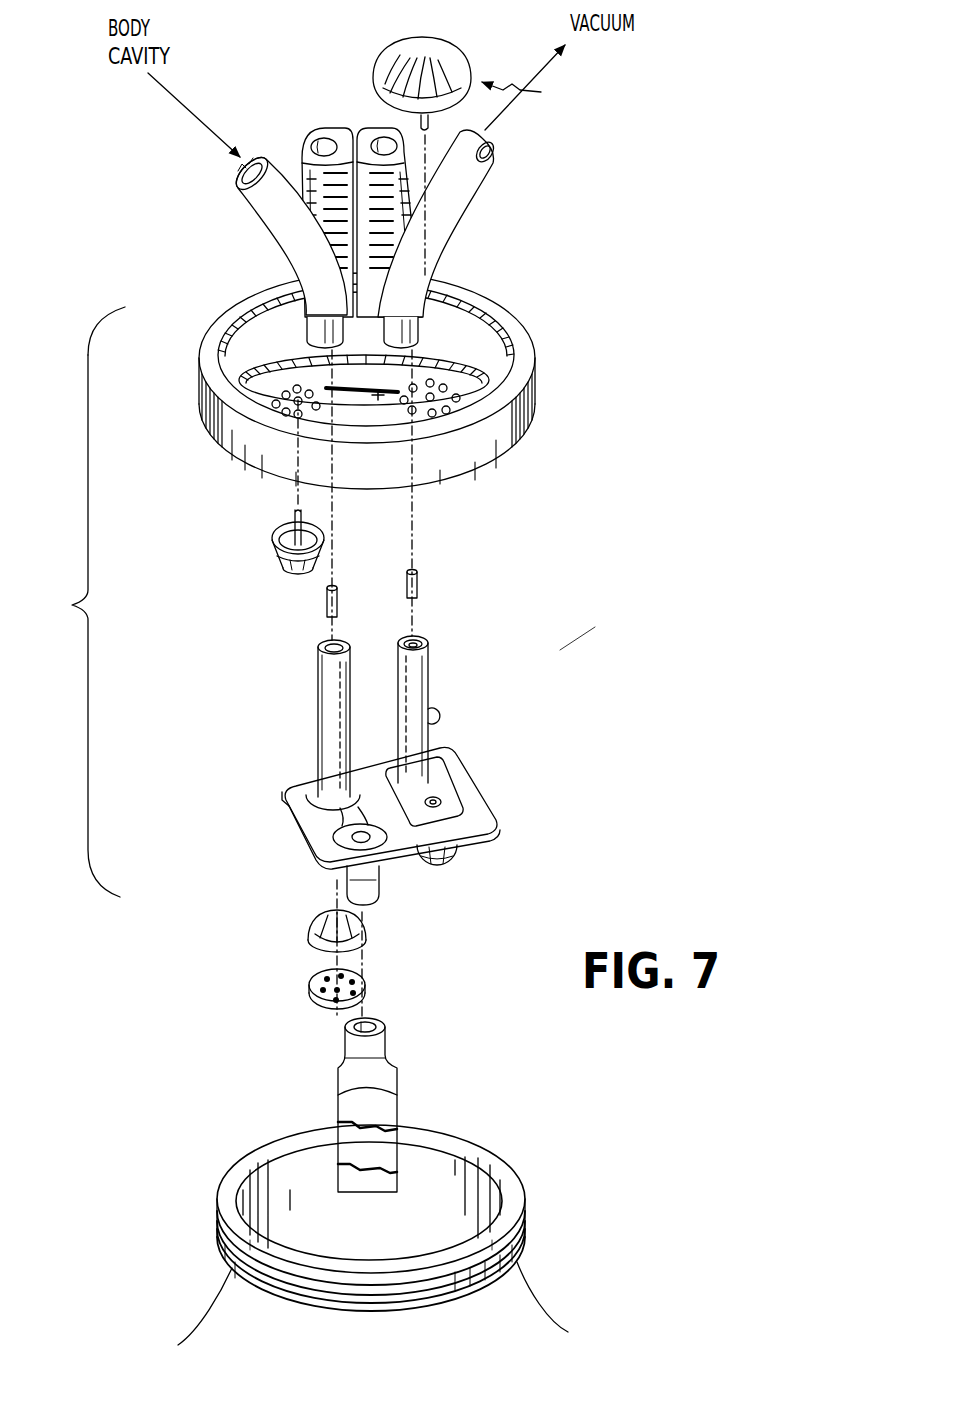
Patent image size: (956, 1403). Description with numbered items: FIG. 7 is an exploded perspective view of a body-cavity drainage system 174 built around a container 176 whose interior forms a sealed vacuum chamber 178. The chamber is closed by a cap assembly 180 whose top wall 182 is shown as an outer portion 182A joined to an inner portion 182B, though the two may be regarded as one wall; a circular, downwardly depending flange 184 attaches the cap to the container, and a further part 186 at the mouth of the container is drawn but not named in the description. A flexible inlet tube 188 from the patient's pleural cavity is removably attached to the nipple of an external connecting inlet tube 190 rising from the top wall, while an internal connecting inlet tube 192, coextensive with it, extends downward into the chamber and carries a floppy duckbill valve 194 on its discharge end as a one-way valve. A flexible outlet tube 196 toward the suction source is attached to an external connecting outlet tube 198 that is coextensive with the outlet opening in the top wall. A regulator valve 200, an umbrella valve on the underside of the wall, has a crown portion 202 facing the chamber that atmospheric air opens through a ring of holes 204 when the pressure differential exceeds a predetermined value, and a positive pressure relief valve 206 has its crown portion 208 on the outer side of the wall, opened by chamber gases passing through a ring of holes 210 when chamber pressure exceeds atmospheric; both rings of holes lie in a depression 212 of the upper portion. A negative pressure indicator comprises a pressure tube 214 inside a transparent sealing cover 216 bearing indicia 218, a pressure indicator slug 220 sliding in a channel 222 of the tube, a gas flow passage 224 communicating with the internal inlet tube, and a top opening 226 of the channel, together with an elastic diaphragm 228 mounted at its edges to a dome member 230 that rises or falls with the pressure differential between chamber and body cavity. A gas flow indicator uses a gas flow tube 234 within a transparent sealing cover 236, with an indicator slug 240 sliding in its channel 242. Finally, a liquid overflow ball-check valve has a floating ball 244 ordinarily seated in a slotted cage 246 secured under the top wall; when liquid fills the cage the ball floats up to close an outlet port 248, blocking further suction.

The system 174 is at (180, 288).
The container 176 is at (577, 1305).
The vacuum chamber 178 is at (371, 1302).
The cap assembly 180 is at (596, 627).
The top wall 182 is at (73, 626).
The outer portion 182A is at (200, 405).
The inner portion 182B is at (286, 810).
The flange 184 is at (535, 390).
The threaded lower ring 186 is at (527, 1233).
The flexible inlet tube 188 is at (280, 205).
The external connecting inlet tube 190 is at (322, 330).
The internal connecting inlet tube 192 is at (379, 890).
The floppy duckbill valve 194 is at (345, 1079).
The flexible outlet tube 196 is at (455, 200).
The external connecting outlet tube 198 is at (416, 338).
The regulator valve 200 is at (273, 527).
The crown portion 202 is at (290, 570).
The ring of holes 204 is at (311, 406).
The positive pressure relief valve 206 is at (528, 90).
The crown portion 208 is at (432, 50).
The ring of holes 210 is at (413, 401).
The depression 212 is at (472, 365).
The pressure tube 214 is at (318, 722).
The transparent sealing cover 216 is at (330, 135).
The indicia 218 is at (330, 190).
The pressure indicator slug 220 is at (325, 603).
The channel 222 is at (325, 683).
The gas flow passage 224 is at (340, 813).
The top opening 226 is at (327, 645).
The elastic diaphragm 228 is at (306, 922).
The dome member 230 is at (309, 984).
The gas flow tube 234 is at (430, 685).
The transparent sealing cover 236 is at (381, 130).
The indicator slug 240 is at (420, 585).
The channel 242 is at (420, 645).
The floating ball 244 is at (438, 713).
The cage 246 is at (452, 865).
The outlet port 248 is at (443, 801).